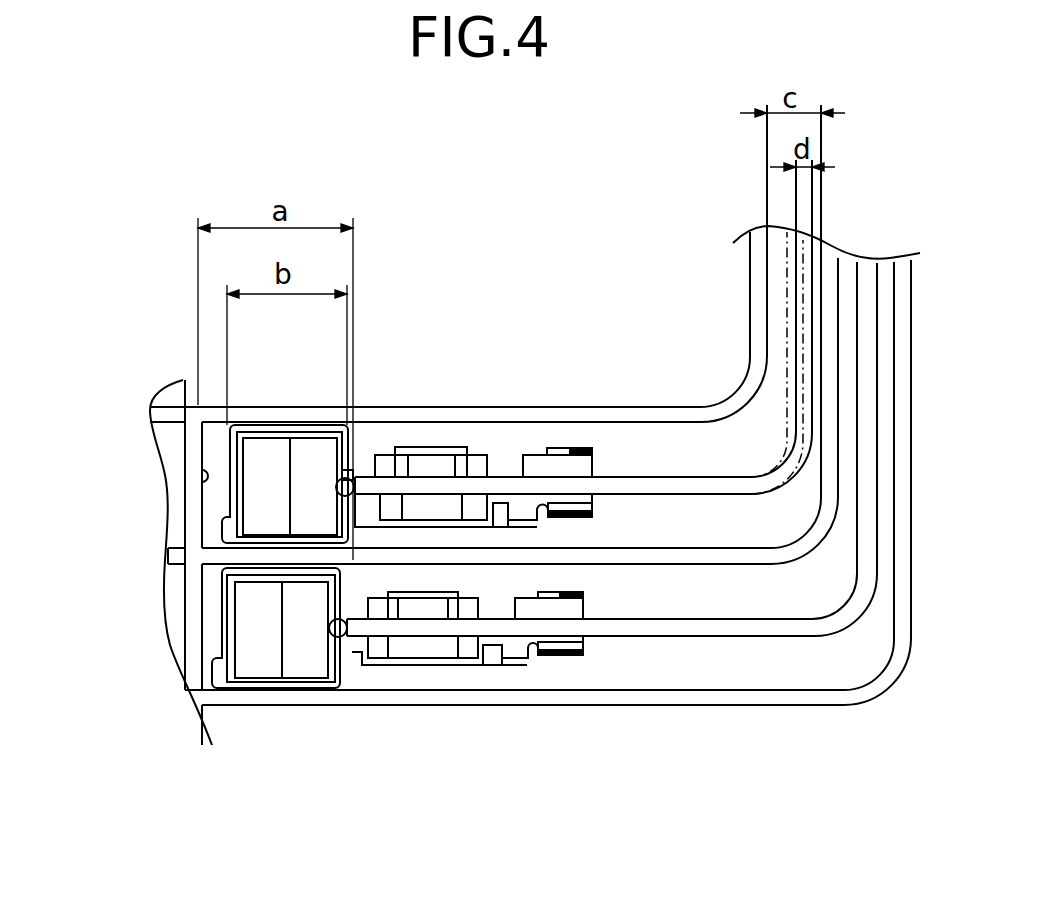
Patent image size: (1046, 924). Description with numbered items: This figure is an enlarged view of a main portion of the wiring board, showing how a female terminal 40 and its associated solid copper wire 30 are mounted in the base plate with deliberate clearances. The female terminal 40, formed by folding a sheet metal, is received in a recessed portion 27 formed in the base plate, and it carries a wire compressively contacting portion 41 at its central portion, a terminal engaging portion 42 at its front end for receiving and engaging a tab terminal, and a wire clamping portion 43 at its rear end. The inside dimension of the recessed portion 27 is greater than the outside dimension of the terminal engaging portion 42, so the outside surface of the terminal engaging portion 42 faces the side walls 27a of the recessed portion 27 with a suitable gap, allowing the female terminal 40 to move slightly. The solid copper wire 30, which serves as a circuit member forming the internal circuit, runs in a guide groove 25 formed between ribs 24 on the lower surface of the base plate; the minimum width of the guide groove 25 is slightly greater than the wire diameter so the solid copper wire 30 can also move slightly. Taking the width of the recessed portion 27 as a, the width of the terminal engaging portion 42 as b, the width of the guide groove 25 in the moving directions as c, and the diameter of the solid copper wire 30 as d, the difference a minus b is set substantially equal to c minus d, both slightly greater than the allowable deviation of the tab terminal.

The ribs 24 is at (645, 412).
The guide groove 25 is at (710, 447).
The recessed portion 27 is at (212, 510).
The side walls 27a is at (202, 471).
The solid copper wire 30 is at (503, 483).
The female terminal 40 is at (403, 437).
The wire compressively contacting portion 41 is at (437, 458).
The terminal engaging portion 42 is at (258, 412).
The wire clamping portion 43 is at (572, 450).